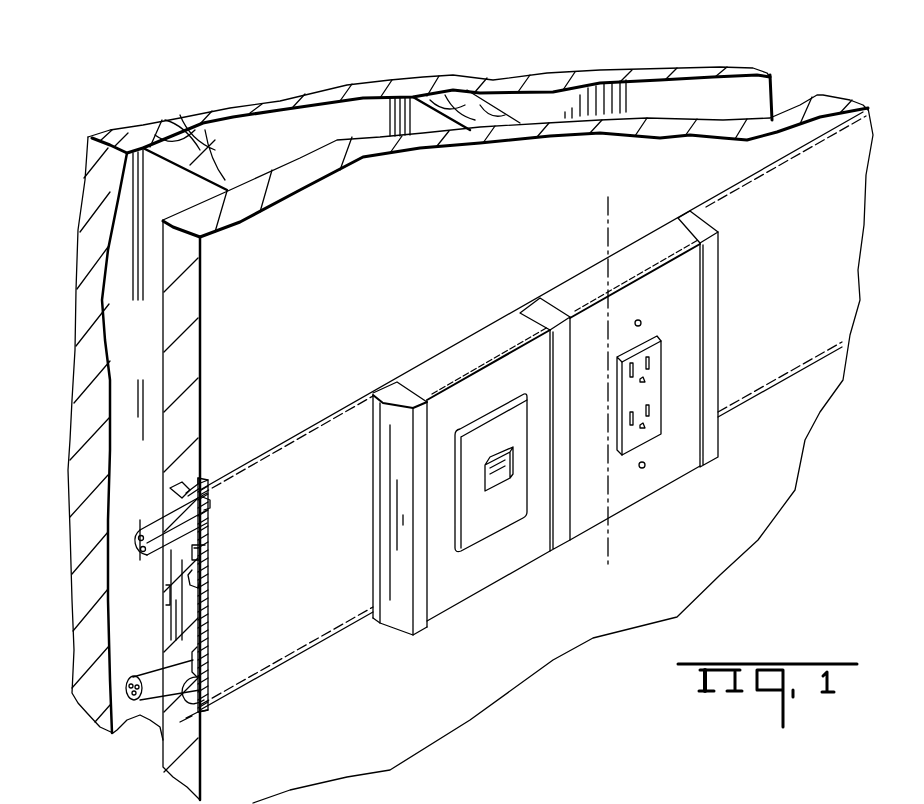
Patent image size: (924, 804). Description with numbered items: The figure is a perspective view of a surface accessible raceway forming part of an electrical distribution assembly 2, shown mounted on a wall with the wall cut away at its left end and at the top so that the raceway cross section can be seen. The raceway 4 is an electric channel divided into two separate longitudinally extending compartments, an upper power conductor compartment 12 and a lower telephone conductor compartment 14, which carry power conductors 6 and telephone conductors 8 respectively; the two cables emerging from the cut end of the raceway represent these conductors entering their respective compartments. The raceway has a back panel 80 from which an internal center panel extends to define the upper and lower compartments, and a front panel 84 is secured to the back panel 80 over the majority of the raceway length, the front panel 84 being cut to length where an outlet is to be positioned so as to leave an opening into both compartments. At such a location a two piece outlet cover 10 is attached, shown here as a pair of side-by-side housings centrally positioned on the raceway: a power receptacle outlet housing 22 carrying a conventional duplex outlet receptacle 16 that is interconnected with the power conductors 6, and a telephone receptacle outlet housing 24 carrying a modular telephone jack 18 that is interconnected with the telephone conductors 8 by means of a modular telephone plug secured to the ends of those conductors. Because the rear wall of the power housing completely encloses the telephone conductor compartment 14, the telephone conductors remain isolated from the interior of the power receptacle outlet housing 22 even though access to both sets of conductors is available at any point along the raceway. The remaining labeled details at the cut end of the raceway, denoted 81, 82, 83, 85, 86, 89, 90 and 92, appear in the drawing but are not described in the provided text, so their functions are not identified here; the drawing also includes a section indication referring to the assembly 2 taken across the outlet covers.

The electrical distribution assembly 2 is at (607, 197).
The raceway 4 is at (290, 492).
The power conductors 6 is at (187, 493).
The telephone conductors 8 is at (170, 727).
The two piece outlet cover 10 is at (446, 424).
The power conductor compartment 12 is at (171, 492).
The telephone conductor compartment 14 is at (190, 623).
The duplex outlet receptacle 16 is at (650, 387).
The modular telephone jack 18 is at (500, 490).
The power receptacle outlet housing 22 is at (669, 393).
The telephone receptacle outlet housing 24 is at (461, 480).
The back panel 80 is at (163, 595).
The flat cable 81 is at (187, 490).
The clip 82 is at (190, 580).
The lower clip 83 is at (205, 693).
The front panel 84 is at (853, 263).
The upper clip 85 is at (207, 553).
The retainer 86 is at (200, 663).
The top lip 89 is at (207, 503).
The round cable 90 is at (163, 667).
The stud 92 is at (167, 297).